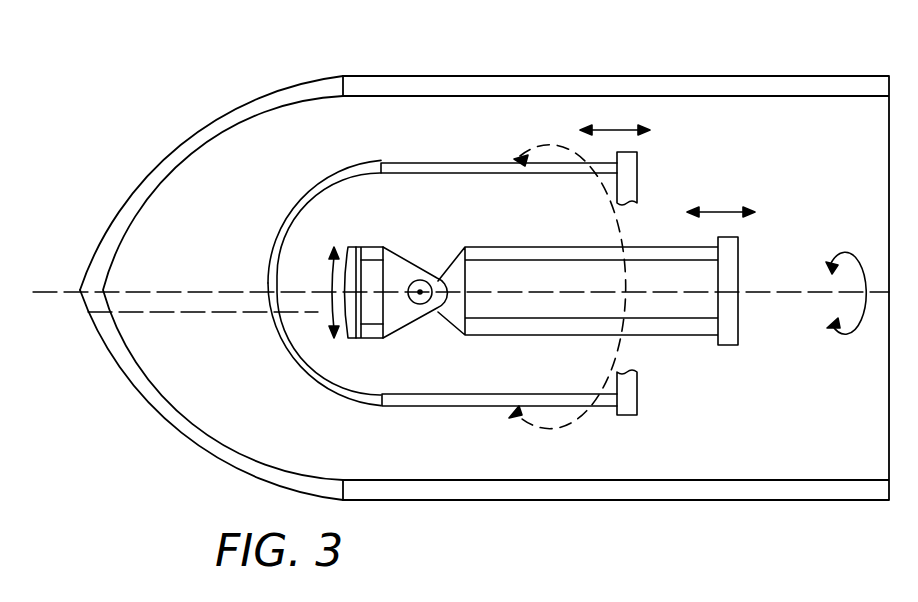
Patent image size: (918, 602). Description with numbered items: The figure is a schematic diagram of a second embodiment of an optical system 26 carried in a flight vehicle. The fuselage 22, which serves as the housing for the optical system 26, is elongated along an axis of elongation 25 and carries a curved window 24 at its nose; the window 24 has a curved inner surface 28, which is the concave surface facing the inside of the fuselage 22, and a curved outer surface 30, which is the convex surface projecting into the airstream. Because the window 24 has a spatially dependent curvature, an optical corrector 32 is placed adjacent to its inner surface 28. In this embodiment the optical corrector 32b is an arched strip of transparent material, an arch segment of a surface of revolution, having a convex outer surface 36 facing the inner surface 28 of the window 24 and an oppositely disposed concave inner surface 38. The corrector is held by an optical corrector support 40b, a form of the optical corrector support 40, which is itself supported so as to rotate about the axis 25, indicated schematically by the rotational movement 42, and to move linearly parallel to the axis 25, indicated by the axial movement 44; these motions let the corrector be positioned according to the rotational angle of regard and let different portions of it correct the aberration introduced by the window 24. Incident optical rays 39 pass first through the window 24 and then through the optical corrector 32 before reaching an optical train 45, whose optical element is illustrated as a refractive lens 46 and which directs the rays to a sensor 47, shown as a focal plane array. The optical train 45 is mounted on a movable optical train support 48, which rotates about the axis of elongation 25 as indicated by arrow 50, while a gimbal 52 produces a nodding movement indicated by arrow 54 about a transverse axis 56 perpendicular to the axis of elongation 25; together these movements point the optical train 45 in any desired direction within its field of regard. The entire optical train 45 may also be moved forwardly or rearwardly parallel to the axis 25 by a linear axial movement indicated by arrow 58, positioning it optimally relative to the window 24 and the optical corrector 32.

The fuselage 22 is at (556, 76).
The curved window 24 is at (168, 158).
The axis of elongation 25 is at (49, 292).
The optical system 26 is at (225, 80).
The curved inner surface 28 is at (154, 193).
The curved outer surface 30 is at (121, 209).
The optical corrector 32 is at (288, 350).
The strip-form optical corrector 32b is at (319, 183).
The convex outer surface 36 is at (300, 201).
The concave inner surface 38 is at (308, 205).
The incident optical rays 39 is at (181, 314).
The optical corrector support 40 is at (448, 163).
The optical corrector support 40b is at (456, 406).
The rotational movement 42 is at (576, 418).
The axial movement 44 is at (631, 114).
The optical train 45 is at (372, 348).
The refractive lens 46 is at (342, 340).
The sensor 47 is at (377, 320).
The optical train support 48 is at (508, 246).
The rotational movement arrow 50 is at (846, 330).
The gimbal 52 is at (401, 246).
The nodding movement arrow 54 is at (333, 286).
The transverse axis 56 is at (425, 290).
The linear axial movement arrow 58 is at (723, 212).